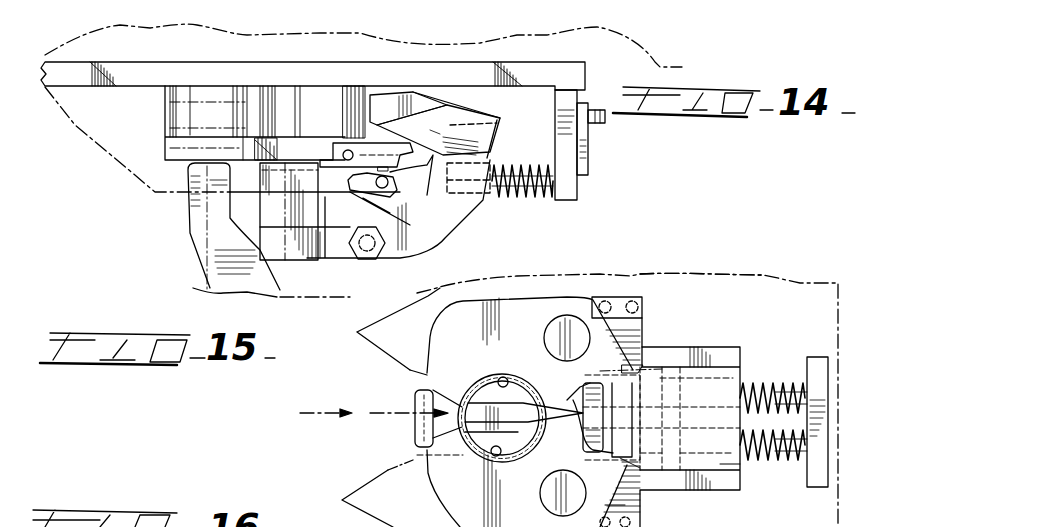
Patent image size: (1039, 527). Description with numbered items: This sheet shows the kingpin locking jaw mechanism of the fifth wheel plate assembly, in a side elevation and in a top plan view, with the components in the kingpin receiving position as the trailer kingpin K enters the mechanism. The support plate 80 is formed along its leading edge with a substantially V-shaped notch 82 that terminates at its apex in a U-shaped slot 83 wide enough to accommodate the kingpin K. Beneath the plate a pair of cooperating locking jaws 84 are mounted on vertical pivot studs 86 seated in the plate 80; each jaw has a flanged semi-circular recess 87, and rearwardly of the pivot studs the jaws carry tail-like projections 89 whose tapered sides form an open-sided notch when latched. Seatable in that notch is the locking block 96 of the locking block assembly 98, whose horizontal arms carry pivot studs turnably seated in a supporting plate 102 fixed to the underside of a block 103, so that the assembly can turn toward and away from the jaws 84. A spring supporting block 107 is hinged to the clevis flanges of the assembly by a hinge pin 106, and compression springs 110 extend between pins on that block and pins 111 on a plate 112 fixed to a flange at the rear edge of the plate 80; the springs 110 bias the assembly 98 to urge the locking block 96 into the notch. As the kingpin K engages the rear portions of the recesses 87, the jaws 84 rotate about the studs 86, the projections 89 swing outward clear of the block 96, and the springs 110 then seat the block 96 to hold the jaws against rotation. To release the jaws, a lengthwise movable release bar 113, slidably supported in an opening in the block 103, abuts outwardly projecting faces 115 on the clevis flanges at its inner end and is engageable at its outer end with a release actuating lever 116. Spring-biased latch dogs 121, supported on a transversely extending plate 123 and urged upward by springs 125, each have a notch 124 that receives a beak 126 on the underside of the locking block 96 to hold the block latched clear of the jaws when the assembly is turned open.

In FIG. 14, the trailer kingpin K is at (195, 95).
In FIG. 15, the trailer kingpin K is at (485, 393).
In FIG. 14, the support plate 80 is at (475, 75).
In FIG. 15, the support plate 80 is at (681, 283).
In FIG. 15, the V-shaped notch 82 is at (410, 370).
In FIG. 15, the U-shaped slot 83 is at (423, 387).
In FIG. 14, the locking jaws 84 is at (293, 107).
In FIG. 15, the locking jaws 84 is at (512, 322).
In FIG. 15, the pivot studs 86 is at (563, 327).
In FIG. 15, the semi-circular recesses 87 is at (490, 398).
In FIG. 15, the tail-like projections 89 is at (630, 368).
In FIG. 14, the locking block 96 is at (433, 118).
In FIG. 15, the locking block 96 is at (740, 464).
In FIG. 14, the locking block assembly 98 is at (487, 163).
In FIG. 15, the locking block assembly 98 is at (712, 365).
In FIG. 14, the supporting plate 102 is at (317, 247).
In FIG. 14, the block 103 is at (307, 157).
In FIG. 14, the hinge pin 106 is at (405, 170).
In FIG. 14, the spring supporting block 107 is at (420, 180).
In FIG. 14, the compression springs 110 is at (537, 193).
In FIG. 15, the compression springs 110 is at (780, 385).
In FIG. 14, the pins 111 is at (523, 193).
In FIG. 15, the pins 111 is at (777, 460).
In FIG. 14, the plate 112 is at (570, 183).
In FIG. 15, the plate 112 is at (817, 440).
In FIG. 14, the release bar 113 is at (243, 175).
In FIG. 15, the release bar 113 is at (518, 432).
In FIG. 14, the outwardly projecting faces 115 is at (363, 200).
In FIG. 14, the release actuating lever 116 is at (202, 220).
In FIG. 15, the release actuating lever 116 is at (418, 427).
In FIG. 14, the latch dogs 121 is at (373, 142).
In FIG. 15, the latch dogs 121 is at (593, 372).
In FIG. 15, the transversely extending plate 123 is at (628, 508).
In FIG. 14, the notch 124 is at (395, 140).
In FIG. 15, the notch 124 is at (637, 437).
In FIG. 14, the springs 125 is at (490, 157).
In FIG. 14, the beak 126 is at (372, 124).